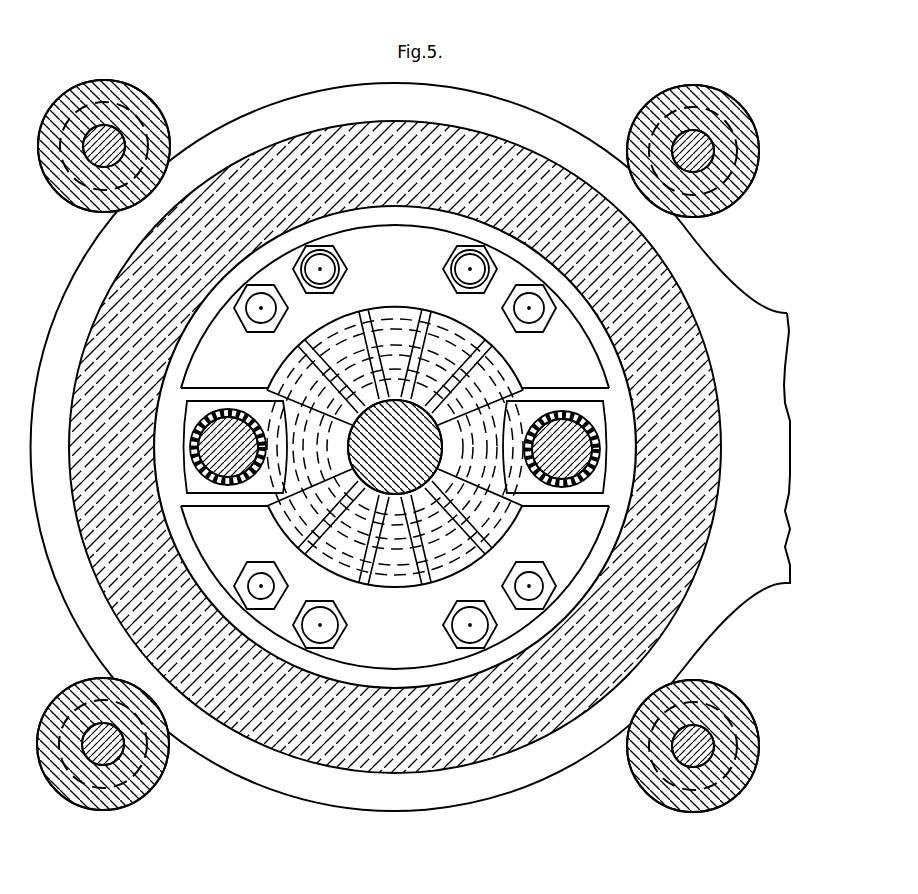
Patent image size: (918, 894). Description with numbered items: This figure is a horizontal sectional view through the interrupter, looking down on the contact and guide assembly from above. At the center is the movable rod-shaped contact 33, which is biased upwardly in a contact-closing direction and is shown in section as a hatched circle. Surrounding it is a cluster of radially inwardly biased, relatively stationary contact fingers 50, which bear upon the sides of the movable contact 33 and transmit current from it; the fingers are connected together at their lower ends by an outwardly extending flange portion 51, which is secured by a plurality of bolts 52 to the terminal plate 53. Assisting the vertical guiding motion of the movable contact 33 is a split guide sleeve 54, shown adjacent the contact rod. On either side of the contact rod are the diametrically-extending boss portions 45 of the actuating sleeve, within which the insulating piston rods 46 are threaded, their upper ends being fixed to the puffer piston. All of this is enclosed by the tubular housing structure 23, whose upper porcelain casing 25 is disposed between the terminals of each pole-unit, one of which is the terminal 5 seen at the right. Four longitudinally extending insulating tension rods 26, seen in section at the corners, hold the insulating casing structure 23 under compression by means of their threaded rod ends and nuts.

The terminal 5 is at (750, 323).
The tubular housing structure 23 is at (429, 770).
The upper porcelain casing 25 is at (500, 140).
The tension rods 26 is at (157, 111).
The movable rod-shaped contact 33 is at (437, 447).
The boss portions 45 is at (255, 488).
The insulating piston rods 46 is at (210, 412).
The contact fingers 50 is at (440, 304).
The flange portion 51 is at (417, 236).
The bolts 52 is at (258, 583).
The terminal plate 53 is at (350, 680).
The split guide sleeve 54 is at (283, 423).